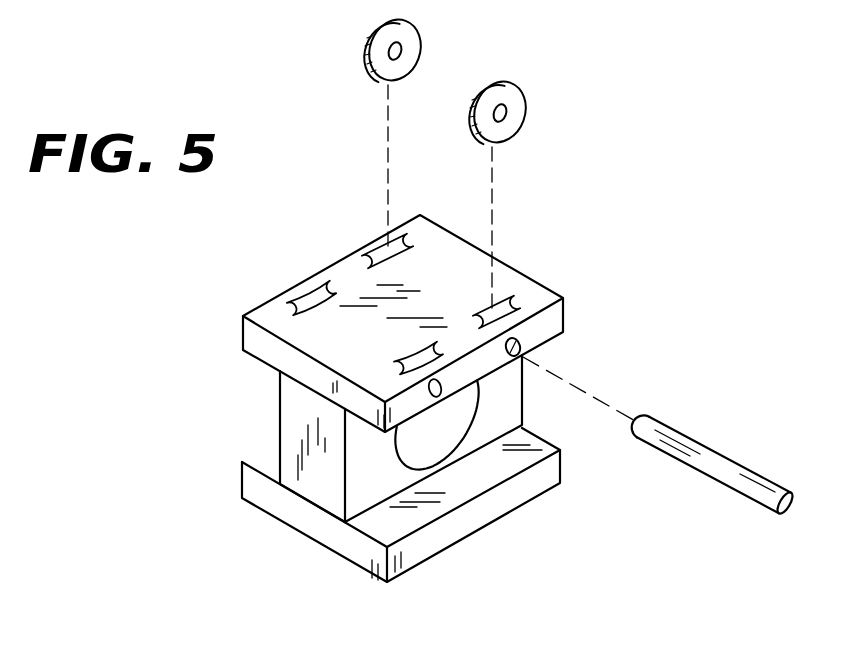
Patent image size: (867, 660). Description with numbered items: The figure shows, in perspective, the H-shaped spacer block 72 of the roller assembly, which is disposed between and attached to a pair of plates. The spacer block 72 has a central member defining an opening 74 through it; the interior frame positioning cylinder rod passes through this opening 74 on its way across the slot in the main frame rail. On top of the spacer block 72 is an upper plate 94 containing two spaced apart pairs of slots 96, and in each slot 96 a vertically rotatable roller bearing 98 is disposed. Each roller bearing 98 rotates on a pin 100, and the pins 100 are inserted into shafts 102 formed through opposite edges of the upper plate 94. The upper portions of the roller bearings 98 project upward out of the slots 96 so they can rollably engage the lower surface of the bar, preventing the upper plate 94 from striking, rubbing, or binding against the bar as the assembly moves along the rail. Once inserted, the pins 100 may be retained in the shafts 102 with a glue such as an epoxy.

The spacer block 72 is at (295, 416).
The opening 74 is at (398, 448).
The upper plate 94 is at (507, 284).
The slots 96 is at (413, 246).
The roller bearing 98 is at (518, 100).
The pin 100 is at (708, 455).
The shaft 102 is at (523, 338).